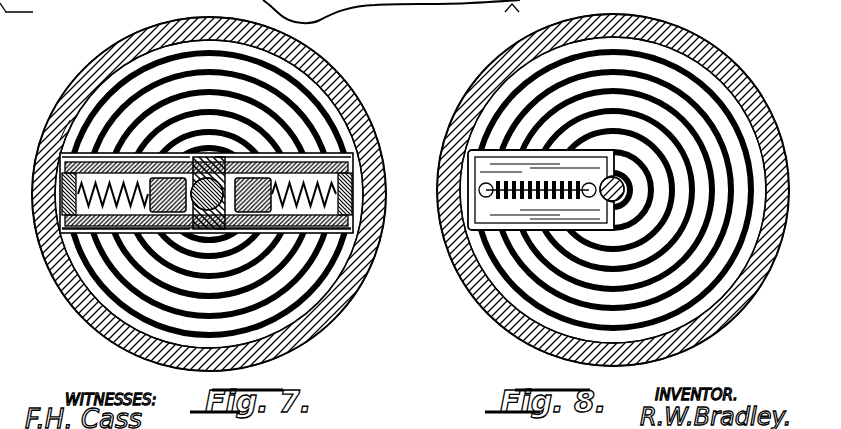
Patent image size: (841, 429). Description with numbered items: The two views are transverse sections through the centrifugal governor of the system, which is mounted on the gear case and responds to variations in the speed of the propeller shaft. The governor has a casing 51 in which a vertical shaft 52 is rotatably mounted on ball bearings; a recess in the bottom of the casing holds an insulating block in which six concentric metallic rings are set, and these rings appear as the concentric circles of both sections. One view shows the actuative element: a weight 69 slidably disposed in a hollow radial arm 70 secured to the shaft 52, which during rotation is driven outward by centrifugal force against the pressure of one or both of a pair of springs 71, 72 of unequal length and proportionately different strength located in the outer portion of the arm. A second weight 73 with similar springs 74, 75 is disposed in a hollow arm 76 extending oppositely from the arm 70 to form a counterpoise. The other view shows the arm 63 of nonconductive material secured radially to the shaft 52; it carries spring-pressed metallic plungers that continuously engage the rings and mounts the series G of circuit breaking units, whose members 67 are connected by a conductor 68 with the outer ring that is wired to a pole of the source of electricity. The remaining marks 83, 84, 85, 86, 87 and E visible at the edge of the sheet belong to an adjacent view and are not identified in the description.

In FIG. 7, the casing 51 is at (128, 44).
In FIG. 8, the casing 51 is at (714, 42).
In FIG. 7, the vertical shaft 52 is at (152, 240).
In FIG. 8, the vertical shaft 52 is at (623, 176).
In FIG. 8, the arm of nonconductive material 63 is at (470, 232).
In FIG. 8, the circuit breaker members 67 is at (512, 197).
In FIG. 8, the conductor 68 is at (487, 185).
In FIG. 8, the series of circuit breaking units G is at (486, 196).
In FIG. 7, the weight 69 is at (110, 242).
In FIG. 7, the hollow radial arm 70 is at (56, 136).
In FIG. 7, the spring 71 is at (62, 231).
In FIG. 7, the spring 72 is at (72, 238).
In FIG. 7, the weight 73 is at (262, 160).
In FIG. 7, the spring 74 is at (292, 171).
In FIG. 7, the spring 75 is at (346, 178).
In FIG. 7, the hollow arm 76 is at (374, 164).
In FIG. 7, the lever 83 is at (336, 7).
In FIG. 7, the link 84 is at (393, 5).
In FIG. 7, the arm 85 is at (437, 26).
In FIG. 8, the member 86 is at (546, 7).
In FIG. 8, the member 87 is at (694, 12).
In FIG. 8, the element E is at (510, 21).